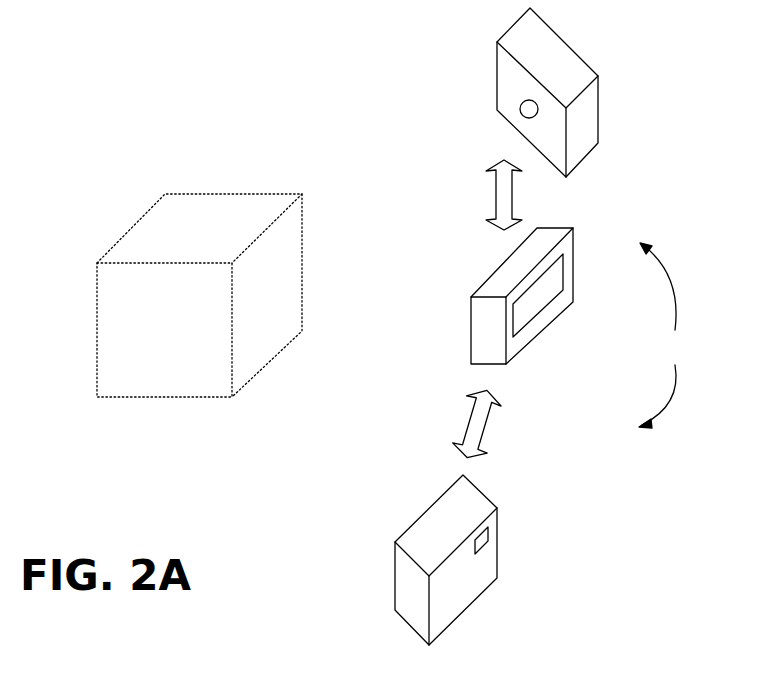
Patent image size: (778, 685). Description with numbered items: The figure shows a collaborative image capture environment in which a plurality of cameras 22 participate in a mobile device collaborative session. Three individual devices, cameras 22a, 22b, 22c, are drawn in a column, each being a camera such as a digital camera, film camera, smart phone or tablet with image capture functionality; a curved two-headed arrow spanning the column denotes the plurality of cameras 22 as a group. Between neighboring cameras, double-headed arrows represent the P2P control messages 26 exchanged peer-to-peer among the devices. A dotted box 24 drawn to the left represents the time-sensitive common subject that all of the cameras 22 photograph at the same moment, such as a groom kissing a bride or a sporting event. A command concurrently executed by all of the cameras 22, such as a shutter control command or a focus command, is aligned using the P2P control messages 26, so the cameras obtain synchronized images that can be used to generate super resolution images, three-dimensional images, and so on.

The container / housing volume 24 is at (182, 192).
The cameras 22 is at (660, 335).
The camera 22a is at (497, 77).
The camera 22b is at (471, 347).
The camera 22c is at (395, 568).
The P2P control messages 26 is at (495, 193).